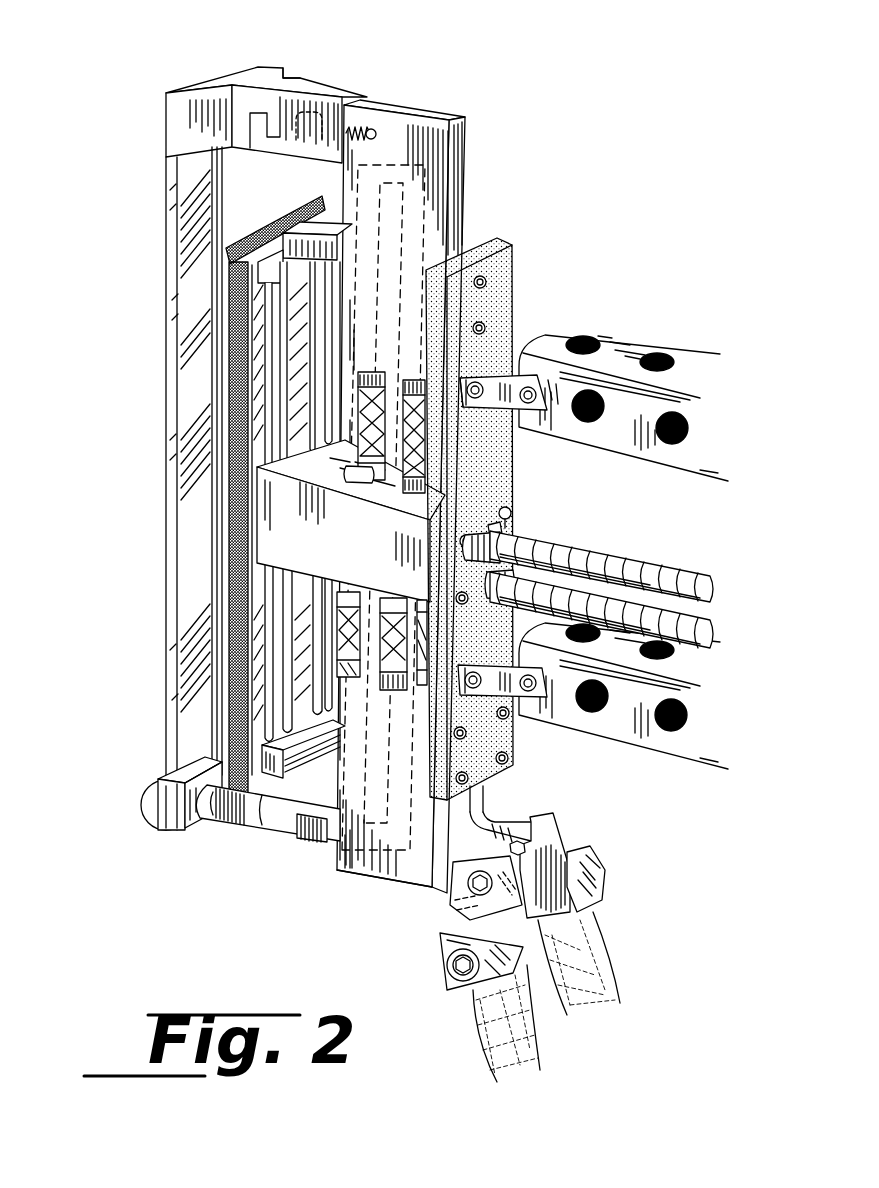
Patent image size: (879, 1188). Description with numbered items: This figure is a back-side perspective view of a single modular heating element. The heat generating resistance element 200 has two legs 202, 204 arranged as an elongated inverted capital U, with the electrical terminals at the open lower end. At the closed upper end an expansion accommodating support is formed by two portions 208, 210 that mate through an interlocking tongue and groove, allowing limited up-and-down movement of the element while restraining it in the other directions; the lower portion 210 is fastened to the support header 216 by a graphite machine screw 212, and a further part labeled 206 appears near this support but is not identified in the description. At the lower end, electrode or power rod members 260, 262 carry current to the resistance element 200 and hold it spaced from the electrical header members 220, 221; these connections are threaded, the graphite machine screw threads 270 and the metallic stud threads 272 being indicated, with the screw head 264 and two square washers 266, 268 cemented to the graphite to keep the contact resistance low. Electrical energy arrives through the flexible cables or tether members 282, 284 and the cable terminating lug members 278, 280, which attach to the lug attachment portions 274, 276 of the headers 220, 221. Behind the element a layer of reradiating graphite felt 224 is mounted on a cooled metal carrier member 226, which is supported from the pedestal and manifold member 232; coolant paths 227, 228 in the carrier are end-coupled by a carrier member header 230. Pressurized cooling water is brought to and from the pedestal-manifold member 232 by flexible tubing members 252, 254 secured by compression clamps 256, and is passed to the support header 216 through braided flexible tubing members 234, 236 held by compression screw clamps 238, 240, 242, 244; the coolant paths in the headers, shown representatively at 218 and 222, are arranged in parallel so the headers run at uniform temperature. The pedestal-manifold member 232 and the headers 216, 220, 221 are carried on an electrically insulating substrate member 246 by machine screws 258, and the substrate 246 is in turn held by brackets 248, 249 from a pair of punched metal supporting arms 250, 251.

The heat generating resistance element 200 is at (205, 92).
The leg of resistance element 202 is at (205, 454).
The leg of resistance element 204 is at (243, 160).
The notch 206 is at (283, 75).
The support portion 208 is at (337, 88).
The support portion 210 is at (368, 130).
The graphite machine screw 212 is at (420, 113).
The support header 216 is at (465, 118).
The coolant flow path 218 is at (410, 188).
The electrical header member 220 is at (387, 878).
The electrical header member 221 is at (484, 790).
The fluid circuit path 222 is at (355, 850).
The reradiating material layer 224 is at (240, 357).
The cooled metal carrier member 226 is at (258, 382).
The coolant path 227 is at (270, 458).
The coolant path 228 is at (327, 405).
The carrier member header 230 is at (272, 262).
The pedestal and manifold member 232 is at (317, 532).
The flexible tubing member 234 is at (385, 452).
The flexible tubing member 236 is at (410, 472).
The compression screw clamp 238 is at (530, 345).
The compression screw clamp 240 is at (385, 372).
The compression screw clamp 242 is at (505, 514).
The compression screw clamp 244 is at (510, 529).
The electrically insulating substrate member 246 is at (513, 290).
The bracket 248 is at (615, 340).
The bracket 249 is at (536, 684).
The punched metal supporting arm 250 is at (692, 355).
The punched metal supporting arm 251 is at (647, 747).
The flexible tubing member 252 is at (655, 570).
The flexible tubing member 254 is at (677, 620).
The compression clamp 256 is at (505, 550).
The machine screw 258 is at (484, 284).
The electrode or power rod member 260 is at (228, 825).
The electrode or power rod member 262 is at (322, 782).
The screw head 264 is at (152, 810).
The square washer 266 is at (172, 773).
The square washer 268 is at (187, 830).
The machine screw threads 270 is at (253, 830).
The stud threads 272 is at (302, 842).
The lug attachment portion 274 is at (513, 815).
The lug attachment portion 276 is at (450, 895).
The cable terminating lug member 278 is at (600, 868).
The cable terminating lug member 280 is at (442, 957).
The flexible electrical cable 282 is at (597, 940).
The flexible electrical cable 284 is at (478, 1043).